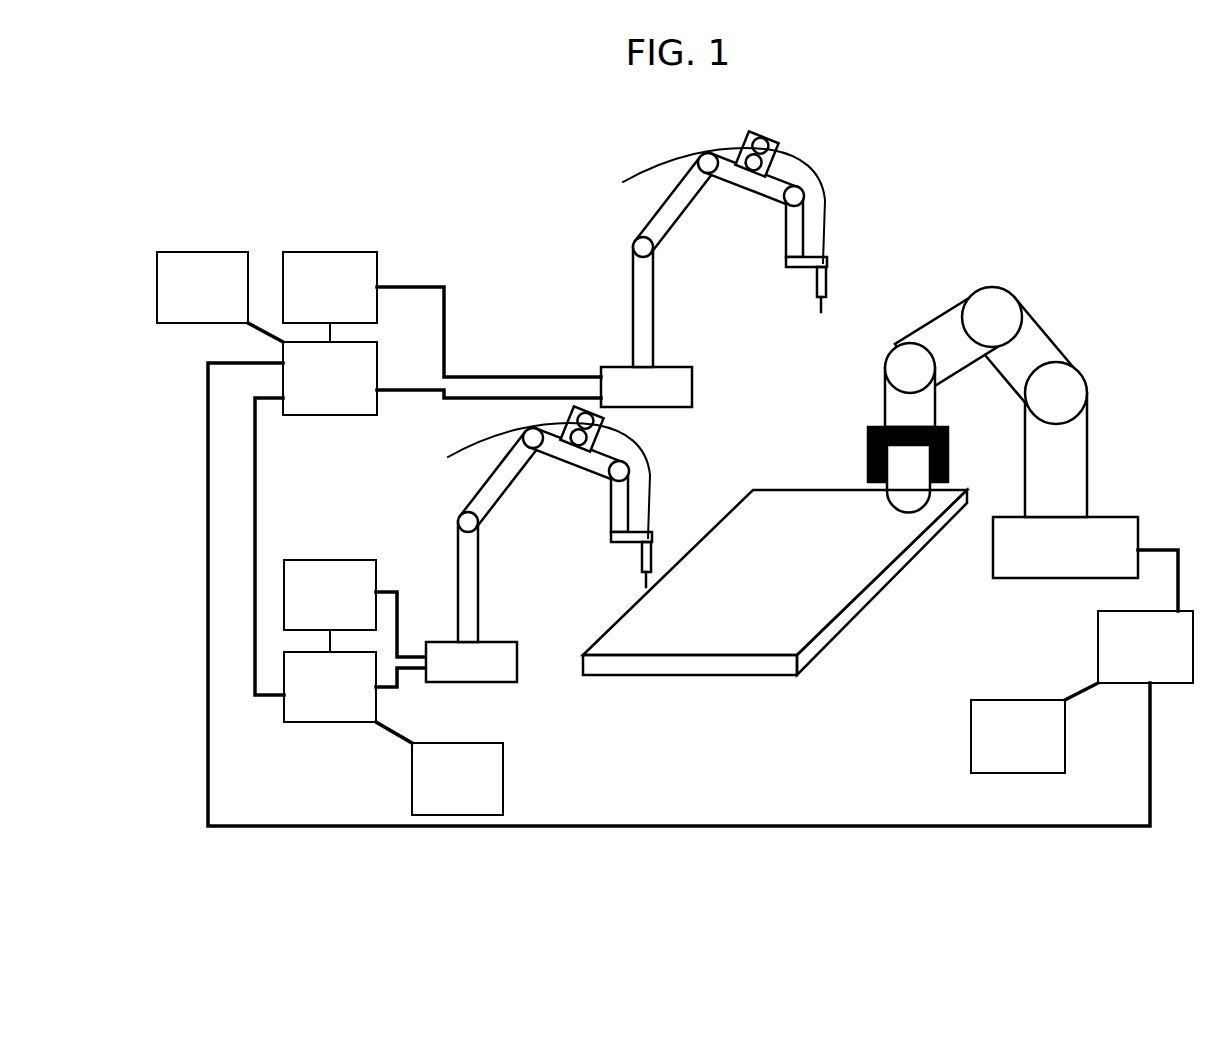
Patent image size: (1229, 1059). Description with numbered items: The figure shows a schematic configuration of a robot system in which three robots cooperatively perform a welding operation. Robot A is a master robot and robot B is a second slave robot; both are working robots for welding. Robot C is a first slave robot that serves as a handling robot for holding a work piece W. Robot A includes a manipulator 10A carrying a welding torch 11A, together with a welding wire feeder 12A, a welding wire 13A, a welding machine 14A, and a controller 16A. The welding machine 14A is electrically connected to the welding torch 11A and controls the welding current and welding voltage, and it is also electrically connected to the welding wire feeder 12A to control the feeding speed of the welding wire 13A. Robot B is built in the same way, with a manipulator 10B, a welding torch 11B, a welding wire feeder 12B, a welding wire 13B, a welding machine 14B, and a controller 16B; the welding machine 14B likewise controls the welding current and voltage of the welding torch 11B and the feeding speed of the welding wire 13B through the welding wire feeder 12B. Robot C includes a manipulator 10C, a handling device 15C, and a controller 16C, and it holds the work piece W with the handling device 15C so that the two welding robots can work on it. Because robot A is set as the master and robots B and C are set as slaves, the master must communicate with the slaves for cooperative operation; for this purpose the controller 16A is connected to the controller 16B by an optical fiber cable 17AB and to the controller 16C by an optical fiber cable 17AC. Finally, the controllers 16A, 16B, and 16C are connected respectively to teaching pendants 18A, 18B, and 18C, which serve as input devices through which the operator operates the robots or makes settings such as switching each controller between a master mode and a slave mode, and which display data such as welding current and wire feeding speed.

The manipulator 10A is at (650, 221).
The welding torch 11A is at (828, 285).
The welding wire feeder 12A is at (770, 138).
The welding wire 13A is at (650, 168).
The welding machine 14A is at (442, 314).
The controller 16A is at (442, 378).
The teaching pendant 18A is at (220, 297).
The manipulator 10B is at (493, 488).
The welding torch 11B is at (653, 550).
The welding wire feeder 12B is at (600, 420).
The welding wire 13B is at (493, 435).
The welding machine 14B is at (354, 608).
The controller 16B is at (354, 697).
The teaching pendant 18B is at (457, 779).
The manipulator 10C is at (1075, 453).
The handling device 15C is at (868, 468).
The controller 16C is at (1129, 625).
The teaching pendant 18C is at (1018, 736).
The optical fiber cable 17AB is at (253, 593).
The optical fiber cable 17AC is at (207, 720).
The robot A is at (666, 240).
The robot B is at (553, 589).
The robot C is at (984, 432).
The work piece W is at (845, 628).